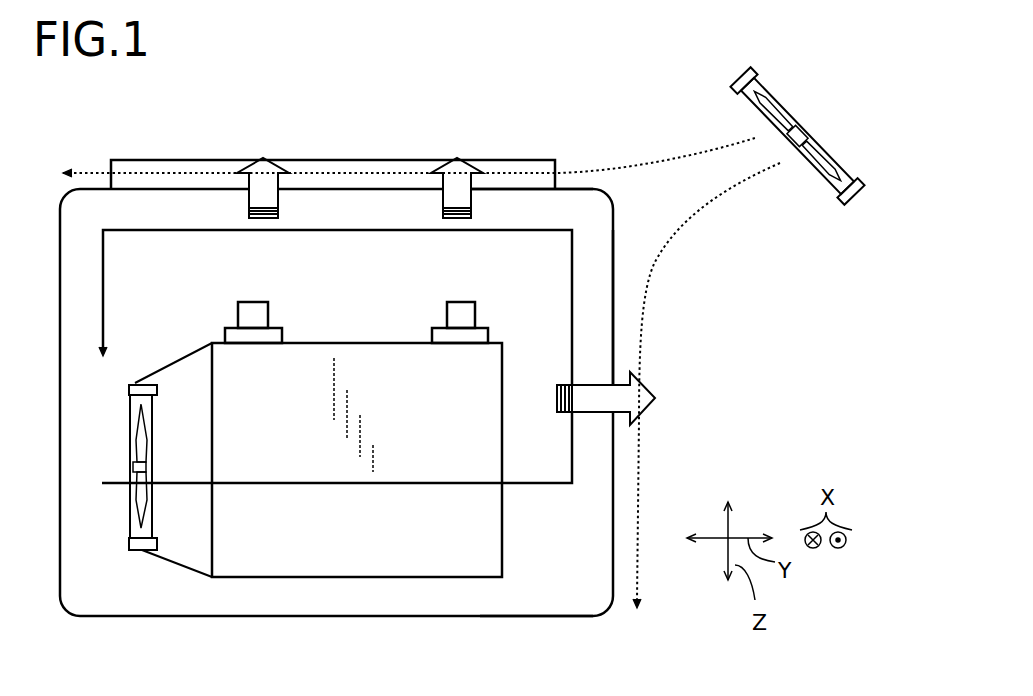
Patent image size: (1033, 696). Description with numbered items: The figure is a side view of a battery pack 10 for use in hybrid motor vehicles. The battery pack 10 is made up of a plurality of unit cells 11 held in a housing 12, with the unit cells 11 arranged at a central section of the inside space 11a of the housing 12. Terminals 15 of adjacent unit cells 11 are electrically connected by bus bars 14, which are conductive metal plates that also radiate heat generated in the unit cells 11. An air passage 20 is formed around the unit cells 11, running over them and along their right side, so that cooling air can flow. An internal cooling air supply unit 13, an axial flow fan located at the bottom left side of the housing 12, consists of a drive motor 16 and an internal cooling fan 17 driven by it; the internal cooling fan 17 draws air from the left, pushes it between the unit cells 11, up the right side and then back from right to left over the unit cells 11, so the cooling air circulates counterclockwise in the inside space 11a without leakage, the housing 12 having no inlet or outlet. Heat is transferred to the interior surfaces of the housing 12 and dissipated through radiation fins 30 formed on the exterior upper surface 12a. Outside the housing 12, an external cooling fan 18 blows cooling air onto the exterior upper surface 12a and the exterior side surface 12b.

The battery pack 10 is at (582, 150).
The unit cells 11 is at (446, 582).
The inside space 11a is at (558, 604).
The housing 12 is at (481, 622).
The exterior upper surface 12a is at (590, 189).
The exterior side surface 12b is at (614, 319).
The internal cooling air supply unit 13 is at (124, 557).
The bus bar 14 is at (297, 318).
The terminal 15 is at (255, 302).
The drive motor 16 is at (133, 465).
The internal cooling fan 17 is at (150, 507).
The external cooling fan 18 is at (806, 183).
The air passage 20 is at (575, 268).
The radiation fins 30 is at (358, 160).